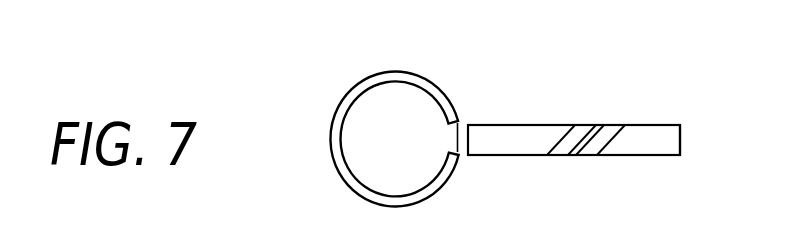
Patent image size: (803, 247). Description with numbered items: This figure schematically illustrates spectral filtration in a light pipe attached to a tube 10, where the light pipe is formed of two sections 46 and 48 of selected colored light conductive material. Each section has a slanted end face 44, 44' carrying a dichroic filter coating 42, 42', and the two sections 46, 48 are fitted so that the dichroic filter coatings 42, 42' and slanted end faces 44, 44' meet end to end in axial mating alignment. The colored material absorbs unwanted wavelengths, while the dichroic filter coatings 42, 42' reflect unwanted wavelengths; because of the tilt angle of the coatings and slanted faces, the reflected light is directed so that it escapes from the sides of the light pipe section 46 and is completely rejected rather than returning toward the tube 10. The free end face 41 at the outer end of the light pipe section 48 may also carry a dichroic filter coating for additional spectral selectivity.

The tube 10 is at (376, 72).
The light pipe section 46 is at (526, 156).
The light pipe section 48 is at (663, 124).
The free end face 41 is at (681, 142).
The slanted end face 44 is at (593, 116).
The dichroic filter coating 42 is at (593, 116).
The slanted end face 44' is at (639, 169).
The dichroic filter coating 42' is at (639, 169).